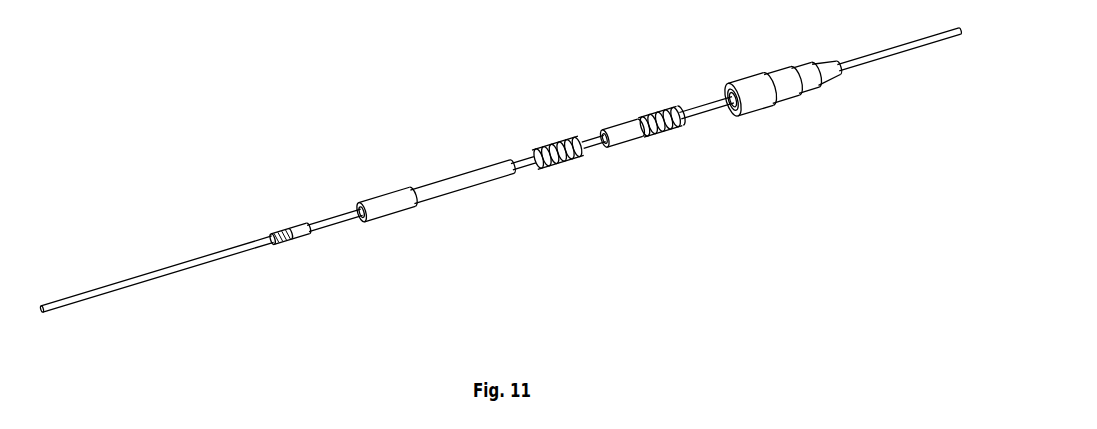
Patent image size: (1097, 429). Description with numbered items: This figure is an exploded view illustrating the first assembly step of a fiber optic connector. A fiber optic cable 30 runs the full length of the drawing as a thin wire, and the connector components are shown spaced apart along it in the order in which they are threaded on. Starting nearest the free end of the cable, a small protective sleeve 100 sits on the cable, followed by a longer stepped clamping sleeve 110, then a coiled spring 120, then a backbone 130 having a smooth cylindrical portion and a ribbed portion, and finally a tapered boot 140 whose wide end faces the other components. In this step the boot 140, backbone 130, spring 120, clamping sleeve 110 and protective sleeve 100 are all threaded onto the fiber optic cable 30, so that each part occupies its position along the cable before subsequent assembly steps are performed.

The fiber optic cable 30 is at (883, 55).
The protective sleeve 100 is at (290, 240).
The clamping sleeve 110 is at (467, 188).
The spring 120 is at (583, 158).
The backbone 130 is at (655, 138).
The boot 140 is at (748, 102).